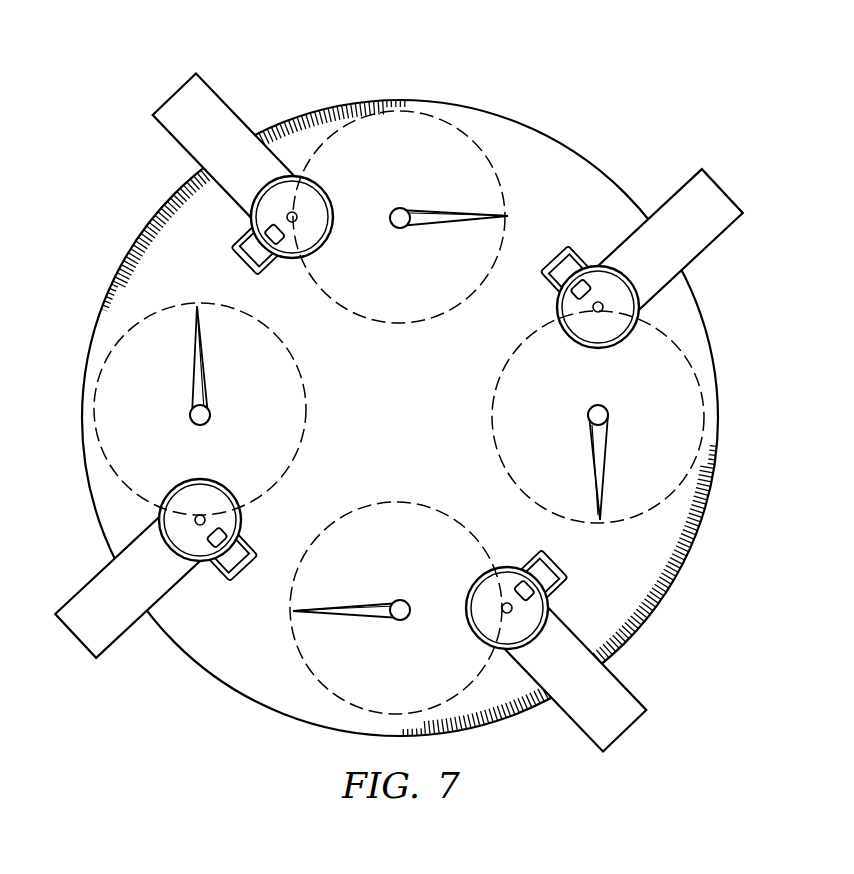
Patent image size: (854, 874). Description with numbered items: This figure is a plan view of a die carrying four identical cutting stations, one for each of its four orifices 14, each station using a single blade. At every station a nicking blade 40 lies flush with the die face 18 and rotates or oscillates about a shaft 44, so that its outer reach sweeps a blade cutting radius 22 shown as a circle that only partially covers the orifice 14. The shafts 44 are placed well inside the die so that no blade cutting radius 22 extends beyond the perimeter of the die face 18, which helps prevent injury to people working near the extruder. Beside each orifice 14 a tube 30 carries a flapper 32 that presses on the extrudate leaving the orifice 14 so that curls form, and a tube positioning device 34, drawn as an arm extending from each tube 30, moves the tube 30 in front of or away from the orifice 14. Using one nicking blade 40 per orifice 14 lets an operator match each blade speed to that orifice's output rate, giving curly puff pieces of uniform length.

The orifice 14 is at (288, 213).
The die face 18 is at (546, 133).
The blade cutting radius 22 is at (405, 323).
The tube 30 is at (327, 238).
The flapper 32 is at (236, 237).
The tube positioning device 34 is at (230, 108).
The nicking blade 40 is at (441, 210).
The shaft 44 is at (398, 208).